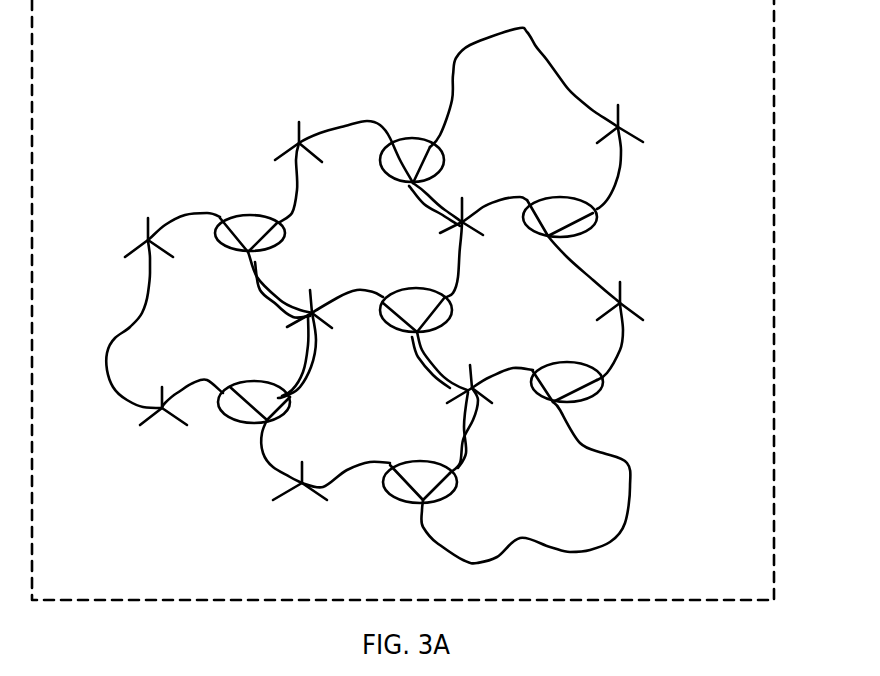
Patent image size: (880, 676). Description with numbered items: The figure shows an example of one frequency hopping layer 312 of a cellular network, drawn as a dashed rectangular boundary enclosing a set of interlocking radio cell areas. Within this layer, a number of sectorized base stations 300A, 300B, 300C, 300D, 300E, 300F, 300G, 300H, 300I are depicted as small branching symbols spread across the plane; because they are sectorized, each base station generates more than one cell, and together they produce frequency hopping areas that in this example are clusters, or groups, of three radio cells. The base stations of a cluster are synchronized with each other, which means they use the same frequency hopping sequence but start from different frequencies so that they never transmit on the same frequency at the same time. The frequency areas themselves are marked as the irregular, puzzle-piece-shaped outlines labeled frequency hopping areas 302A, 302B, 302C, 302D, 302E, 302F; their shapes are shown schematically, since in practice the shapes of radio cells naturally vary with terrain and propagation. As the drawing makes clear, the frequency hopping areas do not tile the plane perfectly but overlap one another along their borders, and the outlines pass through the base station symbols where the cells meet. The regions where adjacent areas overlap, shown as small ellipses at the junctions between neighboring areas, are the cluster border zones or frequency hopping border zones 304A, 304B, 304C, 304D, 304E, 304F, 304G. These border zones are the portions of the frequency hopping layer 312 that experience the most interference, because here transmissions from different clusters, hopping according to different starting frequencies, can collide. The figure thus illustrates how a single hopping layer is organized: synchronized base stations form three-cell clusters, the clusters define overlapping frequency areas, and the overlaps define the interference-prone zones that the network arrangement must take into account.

The base station 300A is at (125, 258).
The base station 300B is at (275, 160).
The base station 300C is at (643, 142).
The base station 300D is at (643, 320).
The base station 300E is at (492, 403).
The base station 300F is at (440, 233).
The base station 300G is at (287, 327).
The base station 300H is at (273, 500).
The base station 300I is at (140, 425).
The frequency hopping area 302A is at (103, 355).
The frequency hopping area 302B is at (392, 102).
The frequency hopping area 302C is at (548, 58).
The frequency hopping area 302D is at (600, 388).
The frequency hopping area 302E is at (625, 530).
The frequency hopping area 302F is at (267, 453).
The border zone 304A is at (227, 248).
The border zone 304B is at (377, 170).
The border zone 304C is at (597, 222).
The border zone 304D is at (588, 404).
The border zone 304E is at (385, 327).
The border zone 304F is at (393, 495).
The border zone 304G is at (233, 423).
The frequency hopping layer 312 is at (775, 512).